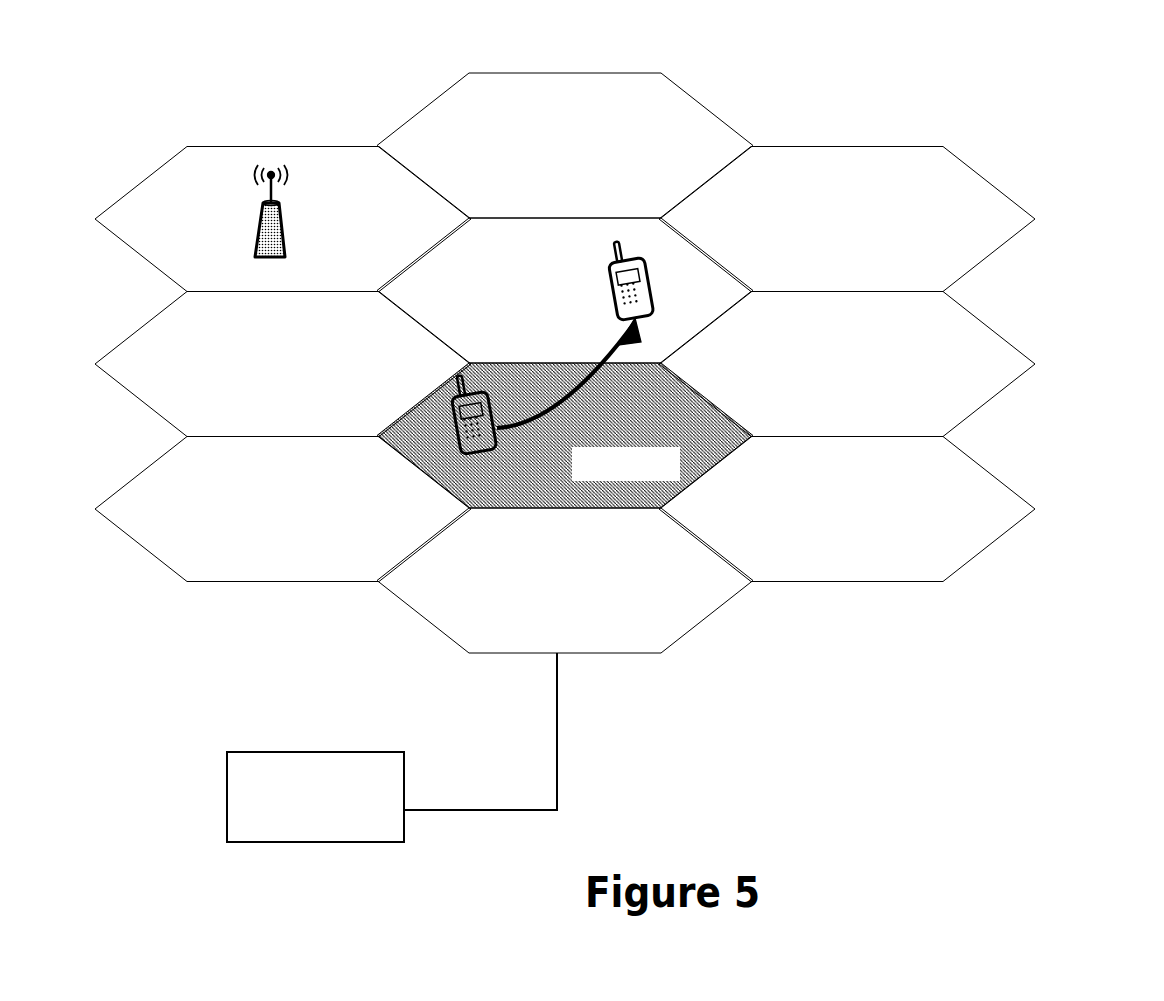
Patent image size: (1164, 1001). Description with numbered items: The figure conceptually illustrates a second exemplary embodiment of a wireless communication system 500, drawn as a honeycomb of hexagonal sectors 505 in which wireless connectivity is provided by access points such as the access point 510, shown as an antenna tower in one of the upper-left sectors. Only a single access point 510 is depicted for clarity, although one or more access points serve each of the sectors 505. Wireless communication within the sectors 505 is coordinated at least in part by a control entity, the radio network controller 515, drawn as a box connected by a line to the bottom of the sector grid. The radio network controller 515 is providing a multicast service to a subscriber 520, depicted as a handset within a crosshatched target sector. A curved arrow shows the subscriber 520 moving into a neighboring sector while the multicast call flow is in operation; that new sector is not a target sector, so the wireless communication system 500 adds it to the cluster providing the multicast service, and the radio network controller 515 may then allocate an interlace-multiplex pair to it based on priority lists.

The wireless communication system 500 is at (1052, 107).
The sectors 505 is at (890, 583).
The access point 510 is at (253, 240).
The radio network controller 515 is at (296, 822).
The subscriber 520 is at (455, 412).